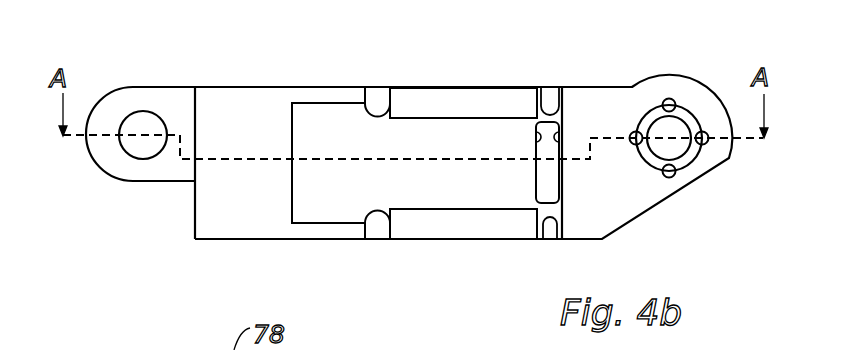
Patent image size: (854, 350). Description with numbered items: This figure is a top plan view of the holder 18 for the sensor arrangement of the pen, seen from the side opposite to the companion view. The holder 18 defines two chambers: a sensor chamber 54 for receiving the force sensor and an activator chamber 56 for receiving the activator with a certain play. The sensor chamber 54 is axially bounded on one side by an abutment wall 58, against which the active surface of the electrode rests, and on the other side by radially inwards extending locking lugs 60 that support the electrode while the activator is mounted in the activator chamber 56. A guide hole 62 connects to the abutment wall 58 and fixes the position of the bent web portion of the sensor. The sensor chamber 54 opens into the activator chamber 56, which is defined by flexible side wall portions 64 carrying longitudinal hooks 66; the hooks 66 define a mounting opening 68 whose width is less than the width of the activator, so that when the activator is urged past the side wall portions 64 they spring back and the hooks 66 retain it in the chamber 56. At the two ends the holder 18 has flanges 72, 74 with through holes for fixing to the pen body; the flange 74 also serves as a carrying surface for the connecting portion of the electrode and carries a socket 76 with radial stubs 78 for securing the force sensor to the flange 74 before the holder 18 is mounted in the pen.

The holder 18 is at (683, 60).
The sensor chamber 54 is at (550, 162).
The activator chamber 56 is at (370, 163).
The abutment wall 58 is at (562, 134).
The locking lugs 60 is at (541, 112).
The guide hole 62 is at (535, 137).
The flexible side wall portions 64 is at (460, 87).
The longitudinal hooks 66 is at (425, 106).
The mounting opening 68 is at (540, 213).
The flange 72 is at (104, 166).
The flange 74 is at (670, 208).
The socket 76 is at (690, 110).
The radial stubs 78 is at (675, 174).